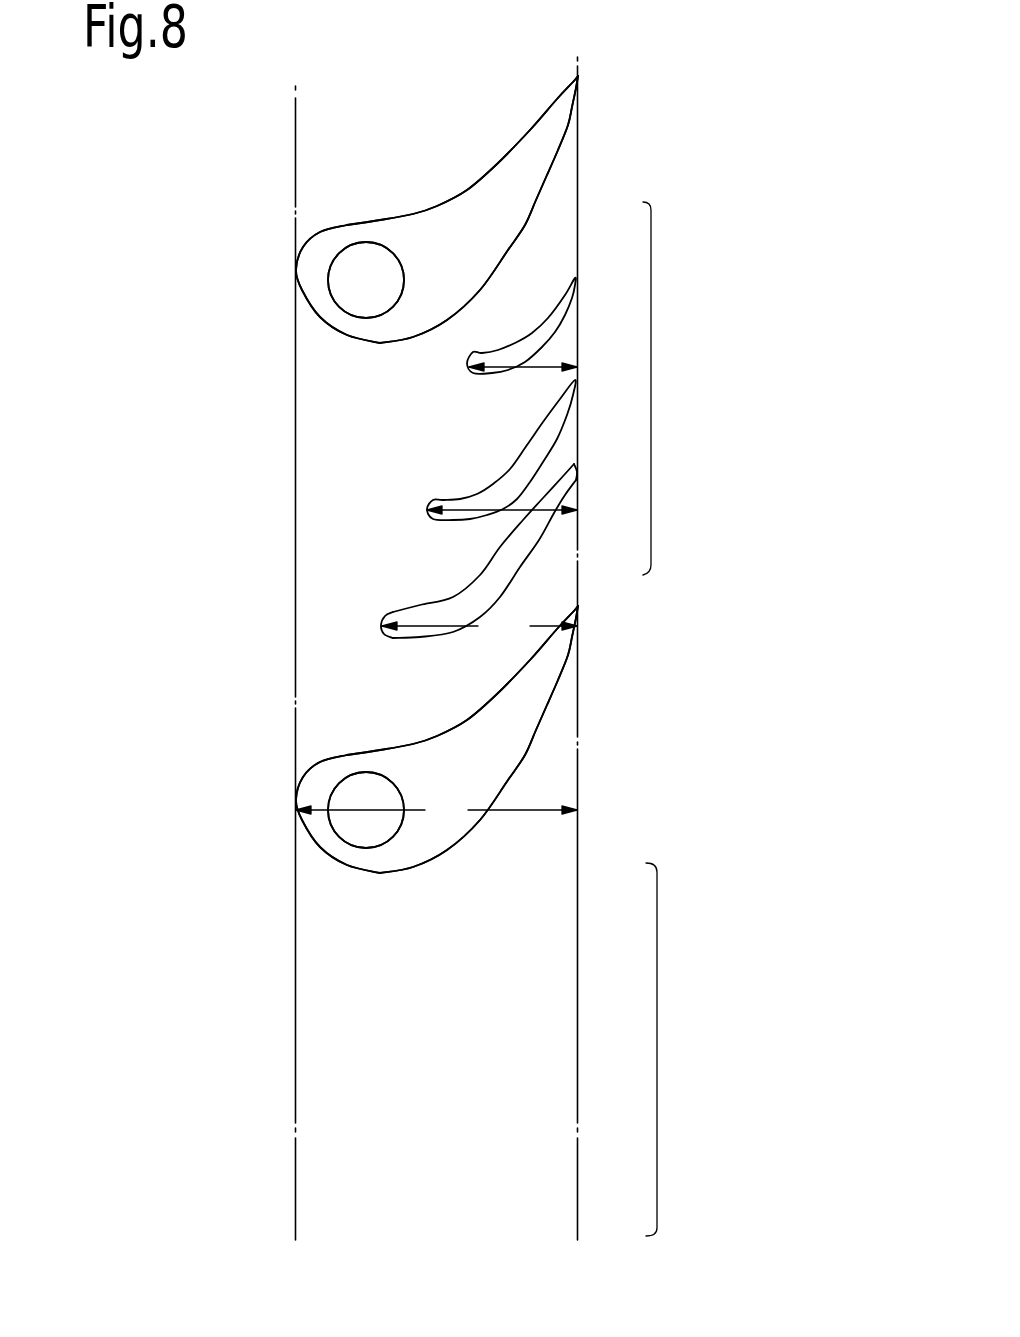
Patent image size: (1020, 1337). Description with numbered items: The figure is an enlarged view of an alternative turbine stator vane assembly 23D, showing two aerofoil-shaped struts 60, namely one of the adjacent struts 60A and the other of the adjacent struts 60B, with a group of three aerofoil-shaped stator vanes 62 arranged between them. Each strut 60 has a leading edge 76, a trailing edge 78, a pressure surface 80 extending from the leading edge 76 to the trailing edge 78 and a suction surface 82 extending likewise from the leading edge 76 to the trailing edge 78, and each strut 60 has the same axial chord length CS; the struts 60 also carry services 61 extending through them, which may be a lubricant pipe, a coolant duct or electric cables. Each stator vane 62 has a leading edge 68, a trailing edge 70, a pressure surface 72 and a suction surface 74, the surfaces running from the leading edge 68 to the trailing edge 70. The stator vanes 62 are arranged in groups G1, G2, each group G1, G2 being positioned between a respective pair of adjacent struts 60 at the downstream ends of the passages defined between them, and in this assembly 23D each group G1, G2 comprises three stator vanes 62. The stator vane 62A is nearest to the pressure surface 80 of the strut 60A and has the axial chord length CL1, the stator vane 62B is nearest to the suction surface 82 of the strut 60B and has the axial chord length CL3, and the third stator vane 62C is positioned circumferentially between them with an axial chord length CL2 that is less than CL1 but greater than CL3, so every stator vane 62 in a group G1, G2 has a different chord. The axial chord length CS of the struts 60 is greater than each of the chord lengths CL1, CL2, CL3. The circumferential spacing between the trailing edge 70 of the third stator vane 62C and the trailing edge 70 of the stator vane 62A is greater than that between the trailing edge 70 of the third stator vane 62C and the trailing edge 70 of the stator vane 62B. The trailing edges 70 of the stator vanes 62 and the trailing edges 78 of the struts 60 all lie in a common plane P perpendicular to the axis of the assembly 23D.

The turbine stator vane assembly 23D is at (692, 496).
The strut 60 is at (441, 482).
The one of the adjacent struts 60A is at (527, 727).
The other of the adjacent struts 60B is at (442, 223).
The services 61 is at (360, 243).
The stator vane 62 is at (464, 480).
The stator vane nearest to the pressure surface of one of the adjacent struts 62A is at (464, 541).
The stator vane nearest to the suction surface of the other of the adjacent struts 62B is at (478, 351).
The third stator vane 62C is at (430, 520).
The leading edge 68 is at (378, 627).
The trailing edge 70 is at (565, 486).
The pressure surface 72 is at (480, 577).
The suction surface 74 is at (453, 637).
The leading edge 76 is at (295, 277).
The trailing edge 78 is at (576, 79).
The pressure surface 80 is at (517, 150).
The suction surface 82 is at (511, 256).
The axial chord length of stator vane 62A CL1 is at (479, 628).
The axial chord length of third stator vane 62C CL2 is at (508, 509).
The axial chord length of stator vane 62B CL3 is at (530, 377).
The axial chord length of the struts CS is at (436, 811).
The common plane P is at (578, 790).
The group of stator vanes G1 is at (666, 388).
The group of stator vanes G2 is at (672, 1049).